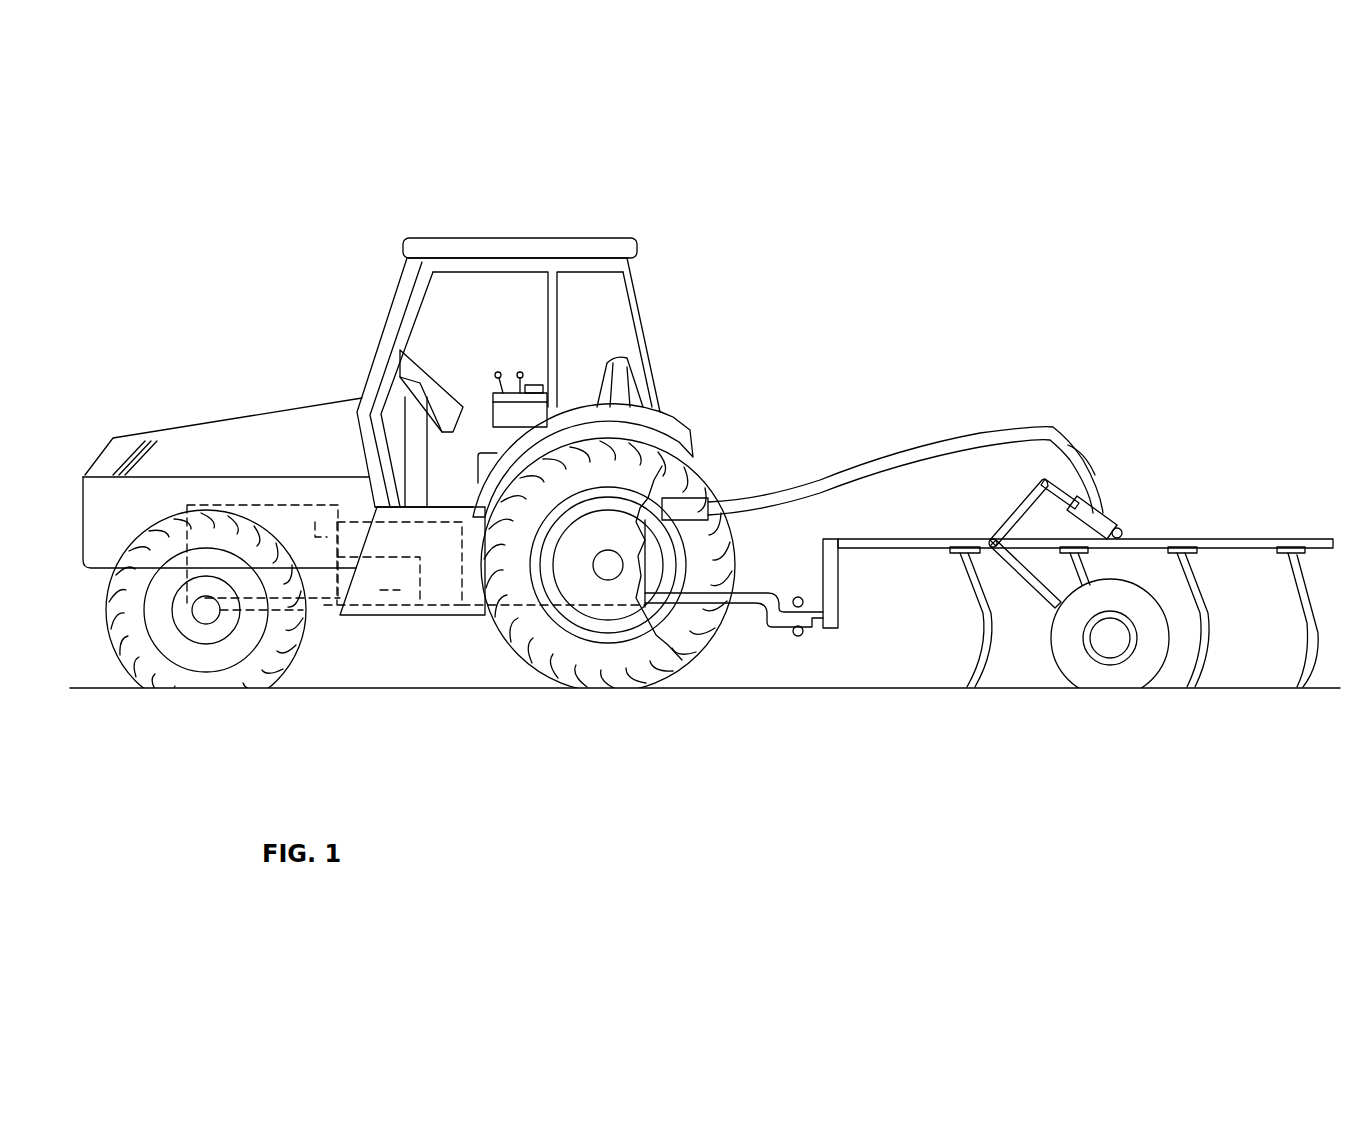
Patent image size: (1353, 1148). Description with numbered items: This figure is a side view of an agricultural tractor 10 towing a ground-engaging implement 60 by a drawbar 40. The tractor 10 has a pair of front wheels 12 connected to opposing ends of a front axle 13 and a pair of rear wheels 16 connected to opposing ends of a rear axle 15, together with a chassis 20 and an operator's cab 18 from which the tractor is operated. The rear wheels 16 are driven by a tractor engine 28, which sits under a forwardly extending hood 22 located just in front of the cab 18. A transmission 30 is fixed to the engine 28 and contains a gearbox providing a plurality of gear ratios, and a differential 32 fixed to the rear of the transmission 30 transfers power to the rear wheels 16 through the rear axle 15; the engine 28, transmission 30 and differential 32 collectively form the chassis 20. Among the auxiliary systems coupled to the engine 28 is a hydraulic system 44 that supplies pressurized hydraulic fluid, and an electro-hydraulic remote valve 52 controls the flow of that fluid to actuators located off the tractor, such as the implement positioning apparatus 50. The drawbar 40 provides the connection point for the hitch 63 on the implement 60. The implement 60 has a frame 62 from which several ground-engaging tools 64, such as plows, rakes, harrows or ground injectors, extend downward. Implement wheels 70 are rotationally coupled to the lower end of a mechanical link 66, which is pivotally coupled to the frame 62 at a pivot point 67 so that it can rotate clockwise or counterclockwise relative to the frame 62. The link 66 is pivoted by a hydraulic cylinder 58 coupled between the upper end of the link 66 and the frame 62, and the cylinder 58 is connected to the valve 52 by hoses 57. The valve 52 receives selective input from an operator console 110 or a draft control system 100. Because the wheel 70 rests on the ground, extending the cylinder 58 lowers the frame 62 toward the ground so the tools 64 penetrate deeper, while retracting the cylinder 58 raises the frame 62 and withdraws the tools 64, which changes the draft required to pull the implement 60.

The agricultural tractor 10 is at (359, 222).
The front wheels 12 is at (122, 668).
The front axle 13 is at (205, 620).
The rear axle 15 is at (607, 570).
The rear wheels 16 is at (681, 673).
The operator's cab 18 is at (643, 321).
The chassis 20 is at (314, 655).
The hood 22 is at (142, 437).
The tractor engine 28 is at (265, 505).
The transmission 30 is at (347, 517).
The differential 32 is at (550, 603).
The drawbar 40 is at (747, 605).
The hydraulic system 44 is at (388, 590).
The implement positioning apparatus 50 is at (1067, 552).
The electro-hydraulic remote valve 52 is at (698, 507).
The hoses 57 is at (1084, 452).
The hydraulic cylinder 58 is at (1120, 513).
The implement 60 is at (1236, 492).
The frame 62 is at (870, 537).
The hitch 63 is at (838, 593).
The ground-engaging tools 64 is at (977, 627).
The mechanical link 66 is at (1007, 537).
The pivot point 67 is at (995, 550).
The implement wheels 70 is at (1087, 688).
The draft control system 100 is at (523, 415).
The operator console 110 is at (520, 360).